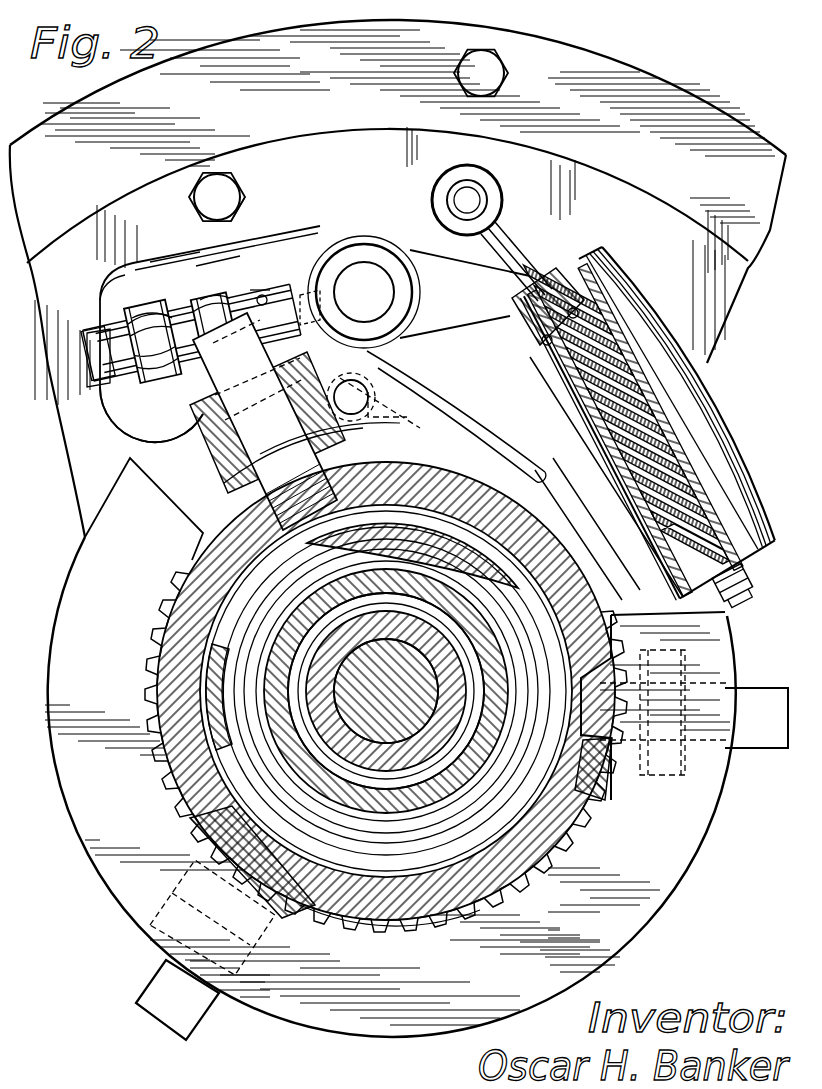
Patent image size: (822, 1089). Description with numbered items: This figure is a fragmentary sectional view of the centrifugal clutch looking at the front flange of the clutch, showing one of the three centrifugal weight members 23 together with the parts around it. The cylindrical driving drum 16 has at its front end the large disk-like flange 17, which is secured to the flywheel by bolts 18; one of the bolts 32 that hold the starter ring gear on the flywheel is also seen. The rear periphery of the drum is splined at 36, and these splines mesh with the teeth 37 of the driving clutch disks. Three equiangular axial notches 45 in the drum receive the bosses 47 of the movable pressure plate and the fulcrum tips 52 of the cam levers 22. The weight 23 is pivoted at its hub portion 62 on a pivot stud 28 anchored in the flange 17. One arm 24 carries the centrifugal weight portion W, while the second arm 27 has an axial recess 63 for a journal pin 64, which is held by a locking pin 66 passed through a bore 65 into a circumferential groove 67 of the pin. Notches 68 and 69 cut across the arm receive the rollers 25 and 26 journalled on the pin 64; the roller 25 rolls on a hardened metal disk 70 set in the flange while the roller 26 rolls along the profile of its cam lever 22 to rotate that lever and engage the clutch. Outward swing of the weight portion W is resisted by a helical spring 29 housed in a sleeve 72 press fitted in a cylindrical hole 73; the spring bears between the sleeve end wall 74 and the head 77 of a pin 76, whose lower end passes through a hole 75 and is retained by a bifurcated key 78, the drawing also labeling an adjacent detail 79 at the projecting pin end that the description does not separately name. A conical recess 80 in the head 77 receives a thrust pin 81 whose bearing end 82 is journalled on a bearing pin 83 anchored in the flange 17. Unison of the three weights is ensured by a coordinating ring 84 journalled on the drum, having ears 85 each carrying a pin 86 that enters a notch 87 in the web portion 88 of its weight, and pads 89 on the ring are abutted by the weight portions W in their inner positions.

The driving drum 16 is at (187, 561).
The disk-like flange 17 is at (320, 204).
The bolts 18 is at (232, 187).
The cam levers 22 is at (203, 386).
The centrifugal weight members 23 is at (380, 218).
The arm 24 is at (527, 425).
The rollers 25 is at (150, 307).
The rollers 26 is at (220, 290).
The second arm 27 is at (166, 262).
The pivot studs 28 is at (376, 303).
The helical springs 29 is at (573, 345).
The bolts 32 is at (494, 57).
The splines 36 is at (157, 665).
The teeth 37 is at (163, 628).
The axial notches 45 is at (260, 498).
The bosses 47 is at (598, 722).
The fulcrum tips 52 is at (364, 918).
The hub portion 62 is at (345, 250).
The axial recess 63 is at (245, 213).
The journal pin 64 is at (180, 305).
The bore 65 is at (260, 292).
The locking pin 66 is at (266, 297).
The circumferential groove 67 is at (312, 300).
The notch 68 is at (120, 298).
The notch 69 is at (199, 266).
The hardened metal disks 70 is at (130, 425).
The sleeves 72 is at (667, 424).
The cylindrical holes 73 is at (640, 410).
The end wall 74 is at (743, 562).
The hole 75 is at (720, 530).
The pins 76 is at (687, 477).
The heads 77 is at (580, 293).
The bifurcated keys 78 is at (740, 577).
The stud end 79 is at (735, 601).
The conical recess 80 is at (553, 280).
The thrust pin 81 is at (514, 240).
The bearing end 82 is at (502, 182).
The bearing pin 83 is at (461, 190).
The coordinating ring 84 is at (474, 452).
The ears 85 is at (407, 421).
The pin 86 is at (395, 380).
The notch 87 is at (358, 390).
The web portion 88 is at (414, 384).
The pads 89 is at (563, 503).
The centrifugal weight portions W is at (612, 260).